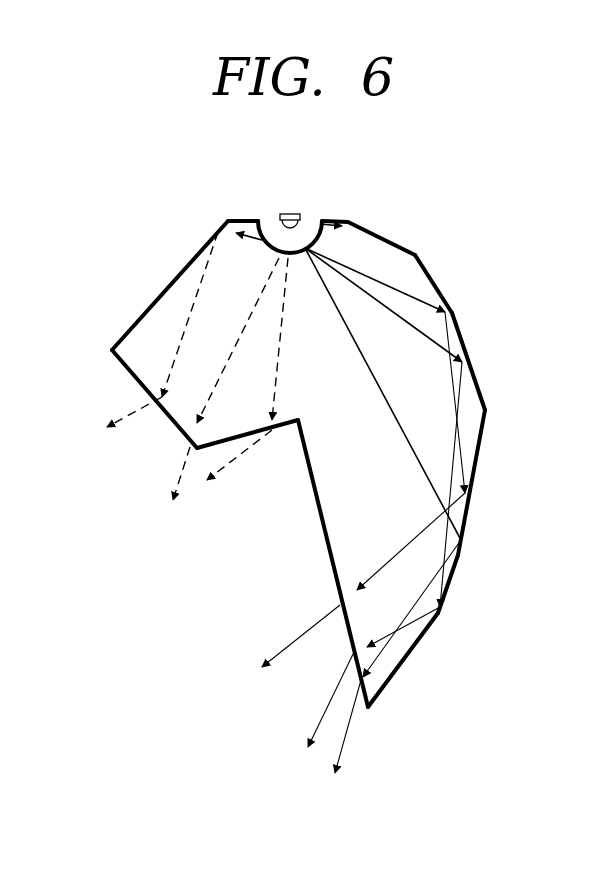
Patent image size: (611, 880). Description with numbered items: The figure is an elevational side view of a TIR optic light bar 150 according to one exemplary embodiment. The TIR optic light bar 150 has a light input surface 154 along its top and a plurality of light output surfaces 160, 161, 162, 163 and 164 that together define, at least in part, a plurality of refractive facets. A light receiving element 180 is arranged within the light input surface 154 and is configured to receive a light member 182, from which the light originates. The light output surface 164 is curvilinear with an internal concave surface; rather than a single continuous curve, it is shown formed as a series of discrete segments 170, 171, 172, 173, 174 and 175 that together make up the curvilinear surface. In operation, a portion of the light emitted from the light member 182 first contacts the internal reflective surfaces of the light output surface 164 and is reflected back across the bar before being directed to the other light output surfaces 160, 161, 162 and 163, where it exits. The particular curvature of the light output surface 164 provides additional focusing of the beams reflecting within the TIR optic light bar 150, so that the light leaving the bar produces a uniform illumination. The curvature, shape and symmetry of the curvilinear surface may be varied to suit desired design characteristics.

The TIR optic light bar 150 is at (199, 548).
The light input surface 154 is at (241, 220).
The light output surface 160 is at (175, 280).
The light output surface 161 is at (131, 373).
The light output surface 162 is at (274, 432).
The light output surface 163 is at (320, 543).
The light output surface 164 is at (500, 567).
The discrete segment 170 is at (401, 681).
The discrete segment 171 is at (444, 616).
The discrete segment 172 is at (470, 492).
The discrete segment 173 is at (464, 352).
The discrete segment 174 is at (440, 283).
The discrete segment 175 is at (390, 238).
The light receiving element 180 is at (322, 218).
The light member 182 is at (291, 212).